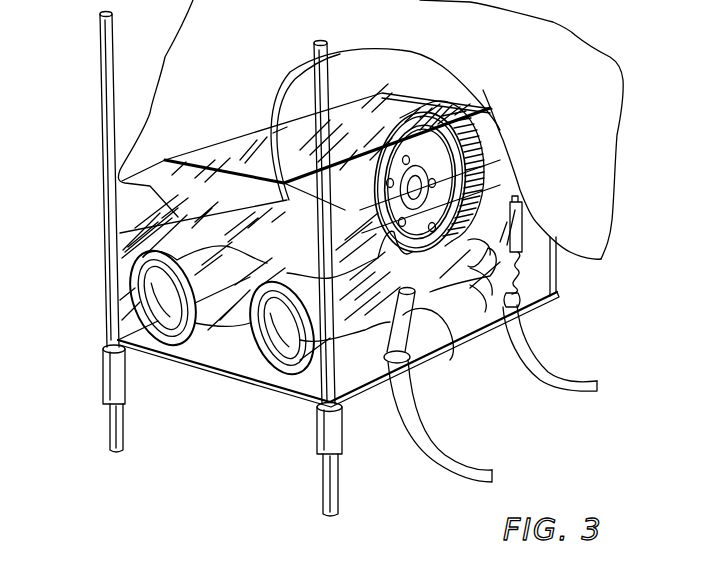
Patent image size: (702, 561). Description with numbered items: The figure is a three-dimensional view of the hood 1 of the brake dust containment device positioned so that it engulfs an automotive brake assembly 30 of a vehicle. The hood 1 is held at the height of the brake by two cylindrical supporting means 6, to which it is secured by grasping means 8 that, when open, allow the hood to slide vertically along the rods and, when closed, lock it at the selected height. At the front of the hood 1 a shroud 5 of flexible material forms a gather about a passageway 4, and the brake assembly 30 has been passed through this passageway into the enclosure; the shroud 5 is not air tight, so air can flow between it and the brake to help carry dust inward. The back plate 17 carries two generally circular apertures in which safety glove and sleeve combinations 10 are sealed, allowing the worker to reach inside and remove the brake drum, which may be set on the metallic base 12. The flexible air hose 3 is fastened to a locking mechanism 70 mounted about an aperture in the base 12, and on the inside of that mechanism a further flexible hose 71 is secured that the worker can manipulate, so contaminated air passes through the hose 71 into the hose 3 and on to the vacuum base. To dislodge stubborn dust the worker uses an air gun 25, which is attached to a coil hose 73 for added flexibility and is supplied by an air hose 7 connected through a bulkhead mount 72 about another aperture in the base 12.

The hood 1 is at (92, 243).
The flexible air hose 3 is at (458, 470).
The passageway 4 is at (497, 130).
The shroud 5 is at (374, 100).
The supporting means 6 is at (110, 423).
The air hose 7 is at (573, 394).
The grasping means 8 is at (103, 372).
The safety glove and sleeve combination 10 is at (200, 345).
The base 12 is at (217, 374).
The back plate 17 is at (135, 215).
The air gun 25 is at (531, 237).
The automotive brake assembly 30 is at (515, 166).
The locking mechanism 70 is at (414, 360).
The flexible hose 71 is at (432, 315).
The bulkhead mount 72 is at (522, 308).
The coil hose 73 is at (525, 288).